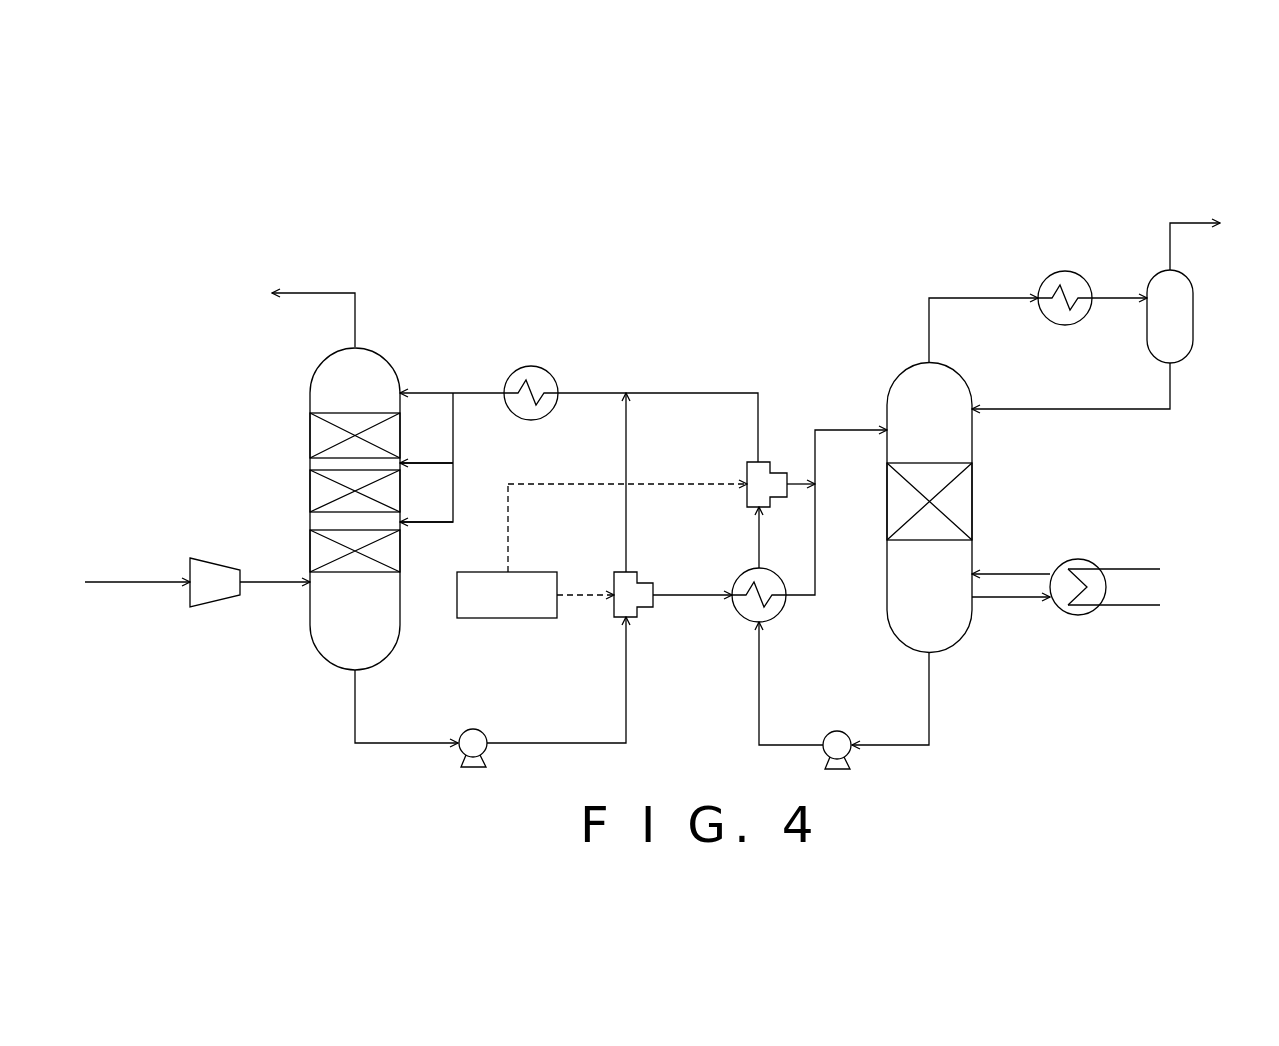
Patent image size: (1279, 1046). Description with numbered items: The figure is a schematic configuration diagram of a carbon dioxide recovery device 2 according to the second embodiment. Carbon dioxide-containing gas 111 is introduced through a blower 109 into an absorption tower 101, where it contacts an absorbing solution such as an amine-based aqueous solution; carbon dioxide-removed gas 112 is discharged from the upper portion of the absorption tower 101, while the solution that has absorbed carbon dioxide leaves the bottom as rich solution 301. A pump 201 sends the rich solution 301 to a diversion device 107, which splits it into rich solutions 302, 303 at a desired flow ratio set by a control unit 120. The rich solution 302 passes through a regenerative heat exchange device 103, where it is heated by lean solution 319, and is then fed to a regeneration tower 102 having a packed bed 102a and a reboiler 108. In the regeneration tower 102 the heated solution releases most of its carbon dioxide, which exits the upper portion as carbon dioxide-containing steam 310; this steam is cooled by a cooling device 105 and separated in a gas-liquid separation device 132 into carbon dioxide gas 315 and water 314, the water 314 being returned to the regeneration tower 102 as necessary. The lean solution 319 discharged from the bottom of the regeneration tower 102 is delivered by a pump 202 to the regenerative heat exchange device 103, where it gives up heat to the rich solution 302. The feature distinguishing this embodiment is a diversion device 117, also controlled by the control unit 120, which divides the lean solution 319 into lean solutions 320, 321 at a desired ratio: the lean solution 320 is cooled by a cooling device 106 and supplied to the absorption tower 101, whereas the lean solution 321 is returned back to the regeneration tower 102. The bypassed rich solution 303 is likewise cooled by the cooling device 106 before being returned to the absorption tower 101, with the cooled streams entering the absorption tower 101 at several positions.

The carbon dioxide recovery device 2 is at (1086, 144).
The absorption tower 101 is at (311, 373).
The regeneration tower 102 is at (976, 508).
The packed bed 102a is at (975, 500).
The regenerative heat exchange device 103 is at (742, 617).
The cooling device 105 is at (1061, 273).
The cooling device 106 is at (535, 366).
The diversion device 107 is at (612, 616).
The reboiler 108 is at (1085, 620).
The blower 109 is at (207, 558).
The carbon dioxide-containing gas 111 is at (138, 581).
The carbon dioxide-removed gas 112 is at (312, 292).
The diversion device 117 is at (745, 470).
The control unit 120 is at (498, 620).
The gas-liquid separation device 132 is at (1195, 318).
The pump 201 is at (469, 729).
The pump 202 is at (831, 731).
The rich solution 301 is at (353, 712).
The rich solution 302 is at (686, 593).
The rich solution 303 is at (625, 455).
The carbon dioxide-containing steam 310 is at (940, 297).
The water 314 is at (1185, 398).
The carbon dioxide gas 315 is at (1185, 222).
The lean solution 319 is at (891, 695).
The lean solution 320 is at (697, 392).
The lean solution 321 is at (793, 482).